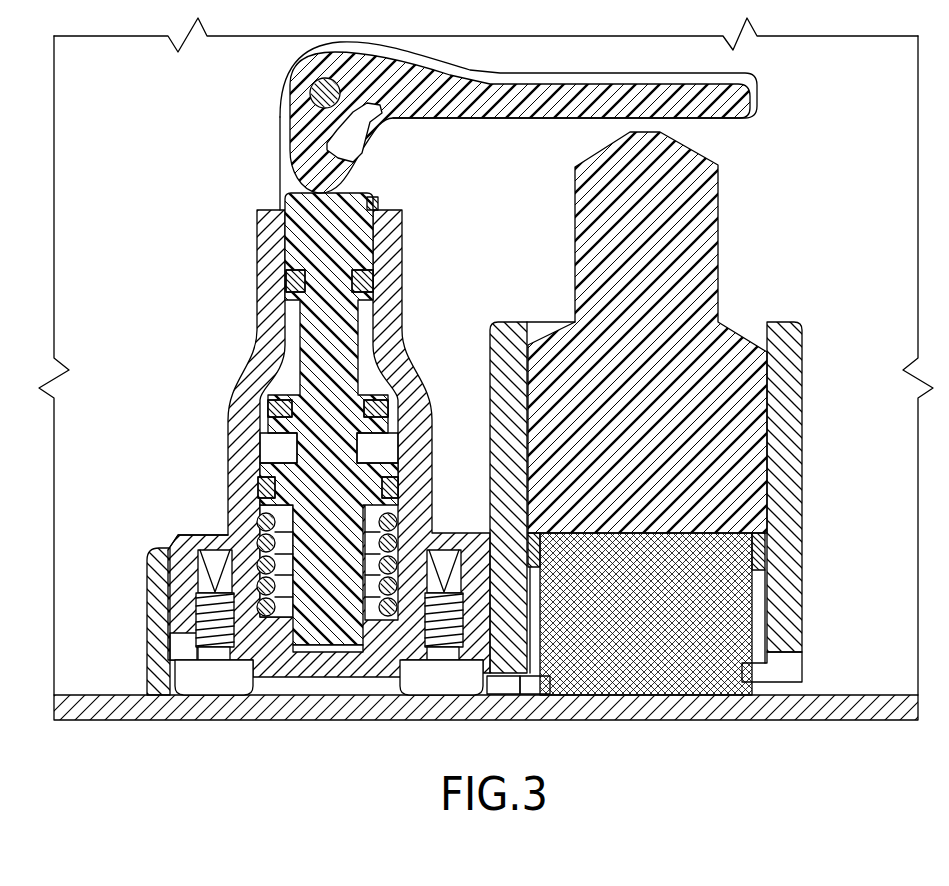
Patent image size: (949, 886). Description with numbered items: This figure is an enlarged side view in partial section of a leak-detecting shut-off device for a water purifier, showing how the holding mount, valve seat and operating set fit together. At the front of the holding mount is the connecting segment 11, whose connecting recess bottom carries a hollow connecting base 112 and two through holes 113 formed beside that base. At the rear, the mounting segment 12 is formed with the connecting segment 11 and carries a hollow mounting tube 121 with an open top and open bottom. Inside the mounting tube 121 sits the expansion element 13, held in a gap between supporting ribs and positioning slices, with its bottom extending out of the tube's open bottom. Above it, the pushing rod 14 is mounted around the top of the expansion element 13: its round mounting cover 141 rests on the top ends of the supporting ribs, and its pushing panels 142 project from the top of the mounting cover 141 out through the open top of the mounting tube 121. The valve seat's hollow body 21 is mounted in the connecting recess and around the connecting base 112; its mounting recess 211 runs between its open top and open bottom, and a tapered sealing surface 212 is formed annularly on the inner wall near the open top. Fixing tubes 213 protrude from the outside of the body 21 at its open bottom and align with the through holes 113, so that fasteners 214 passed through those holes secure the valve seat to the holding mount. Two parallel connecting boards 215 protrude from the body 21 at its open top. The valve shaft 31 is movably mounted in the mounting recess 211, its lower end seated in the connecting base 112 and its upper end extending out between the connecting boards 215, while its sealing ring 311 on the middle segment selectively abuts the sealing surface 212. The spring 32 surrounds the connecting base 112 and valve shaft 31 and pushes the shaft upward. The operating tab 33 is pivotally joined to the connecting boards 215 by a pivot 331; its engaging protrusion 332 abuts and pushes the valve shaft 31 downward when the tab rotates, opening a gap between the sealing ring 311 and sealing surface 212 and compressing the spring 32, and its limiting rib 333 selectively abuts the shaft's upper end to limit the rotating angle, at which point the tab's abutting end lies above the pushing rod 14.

The connecting segment 11 is at (137, 622).
The connecting base 112 is at (282, 585).
The through holes 113 is at (218, 662).
The mounting segment 12 is at (688, 448).
The mounting tube 121 is at (790, 470).
The expansion element 13 is at (682, 685).
The pushing rod 14 is at (671, 332).
The mounting cover 141 is at (757, 548).
The pushing panels 142 is at (710, 277).
The body 21 is at (407, 283).
The mounting recess 211 is at (267, 450).
The sealing surface 212 is at (368, 367).
The fixing tubes 213 is at (188, 550).
The fasteners 214 is at (413, 680).
The connecting boards 215 is at (283, 138).
The valve shaft 31 is at (296, 372).
The sealing ring 311 is at (283, 410).
The spring 32 is at (260, 522).
The operating tab 33 is at (502, 125).
The pivot 331 is at (311, 96).
The engaging protrusion 332 is at (312, 177).
The limiting rib 333 is at (373, 203).